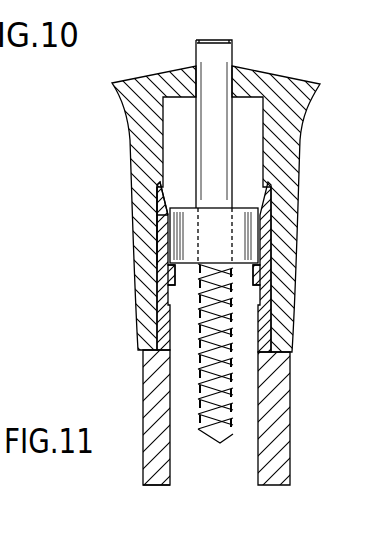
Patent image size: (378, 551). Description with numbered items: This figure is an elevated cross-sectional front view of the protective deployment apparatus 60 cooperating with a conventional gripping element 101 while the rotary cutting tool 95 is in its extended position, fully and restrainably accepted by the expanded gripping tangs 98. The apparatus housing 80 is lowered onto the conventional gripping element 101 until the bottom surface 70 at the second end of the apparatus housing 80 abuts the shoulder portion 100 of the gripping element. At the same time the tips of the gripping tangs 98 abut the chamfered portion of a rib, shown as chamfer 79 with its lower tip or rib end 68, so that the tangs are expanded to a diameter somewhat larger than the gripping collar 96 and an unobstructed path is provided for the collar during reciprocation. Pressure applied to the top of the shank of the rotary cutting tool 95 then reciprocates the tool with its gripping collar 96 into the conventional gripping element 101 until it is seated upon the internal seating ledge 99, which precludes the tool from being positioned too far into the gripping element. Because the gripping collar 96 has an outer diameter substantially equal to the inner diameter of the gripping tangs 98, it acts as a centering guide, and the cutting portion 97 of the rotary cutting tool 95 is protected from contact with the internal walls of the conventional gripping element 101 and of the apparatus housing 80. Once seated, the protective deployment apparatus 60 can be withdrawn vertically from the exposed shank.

The protective deployment apparatus 60 is at (245, 184).
The apparatus housing 80 is at (298, 164).
The bottom surface 70 is at (135, 332).
The chamfer 79 is at (160, 184).
The rib end 68 is at (160, 203).
The gripping tangs 98 is at (160, 240).
The internal seating ledge 99 is at (170, 281).
The rotary cutting tool 95 is at (216, 54).
The gripping collar 96 is at (258, 226).
The cutting portion 97 is at (233, 378).
The shoulder portion 100 is at (143, 372).
The conventional gripping element 101 is at (151, 487).